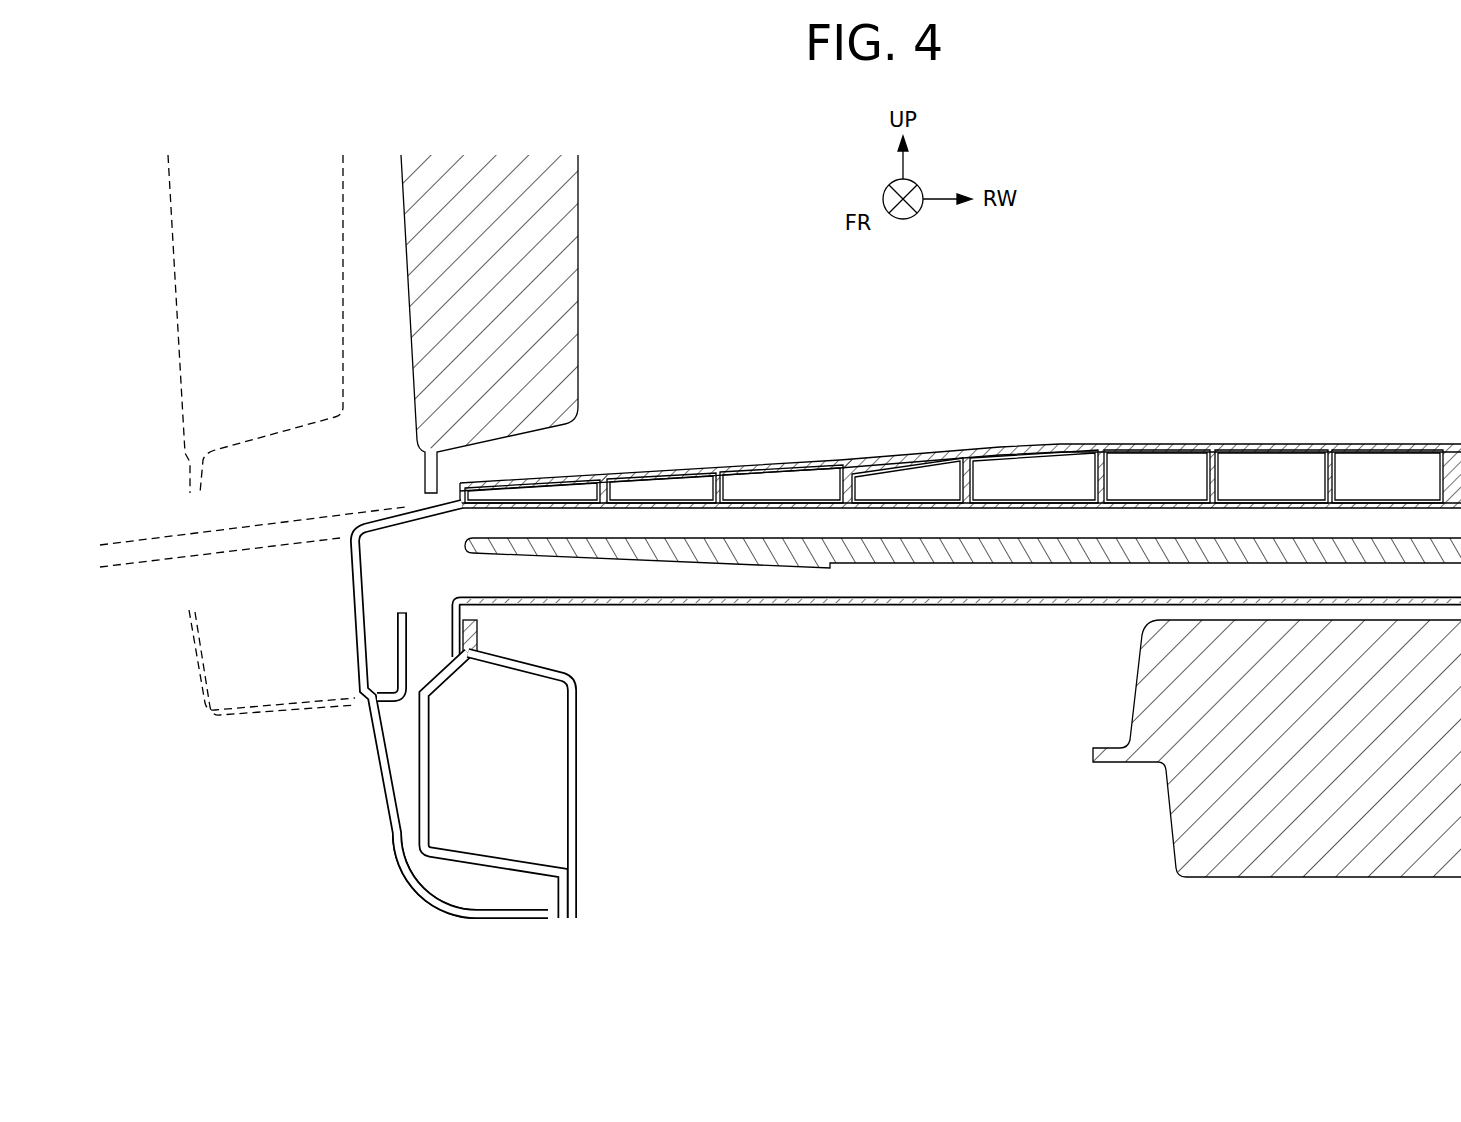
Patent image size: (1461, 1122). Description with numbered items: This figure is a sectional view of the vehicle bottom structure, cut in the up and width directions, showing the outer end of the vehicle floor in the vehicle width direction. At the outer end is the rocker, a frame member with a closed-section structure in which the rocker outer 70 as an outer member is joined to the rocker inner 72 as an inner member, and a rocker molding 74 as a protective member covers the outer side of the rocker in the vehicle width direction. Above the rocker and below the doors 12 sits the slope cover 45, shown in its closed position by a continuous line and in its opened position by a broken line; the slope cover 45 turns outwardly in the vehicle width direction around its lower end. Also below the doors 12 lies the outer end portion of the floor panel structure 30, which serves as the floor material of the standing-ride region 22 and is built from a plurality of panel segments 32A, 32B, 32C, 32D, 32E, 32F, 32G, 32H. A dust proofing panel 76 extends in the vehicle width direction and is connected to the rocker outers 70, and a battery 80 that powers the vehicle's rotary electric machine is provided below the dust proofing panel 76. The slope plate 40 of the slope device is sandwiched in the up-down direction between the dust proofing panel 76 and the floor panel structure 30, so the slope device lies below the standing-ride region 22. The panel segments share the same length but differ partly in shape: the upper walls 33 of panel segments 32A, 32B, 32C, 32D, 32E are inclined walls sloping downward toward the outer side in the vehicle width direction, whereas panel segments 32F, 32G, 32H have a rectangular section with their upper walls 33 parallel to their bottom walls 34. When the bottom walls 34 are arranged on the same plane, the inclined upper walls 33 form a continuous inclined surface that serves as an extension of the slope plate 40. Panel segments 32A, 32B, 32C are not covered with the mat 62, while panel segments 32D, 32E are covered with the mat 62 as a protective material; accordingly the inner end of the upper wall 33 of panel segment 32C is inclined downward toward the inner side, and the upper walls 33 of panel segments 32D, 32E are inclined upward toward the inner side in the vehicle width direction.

The doors 12 is at (560, 203).
The standing-ride region 22 is at (1218, 191).
The floor panel structure 30 is at (698, 380).
The panel segment 32A is at (587, 473).
The panel segment 32B is at (694, 460).
The panel segment 32C is at (802, 452).
The panel segment 32D is at (941, 458).
The panel segment 32E is at (1057, 443).
The panel segment 32F is at (1168, 448).
The panel segment 32G is at (1280, 440).
The panel segment 32H is at (1377, 440).
The upper wall 33 is at (507, 480).
The bottom wall 34 is at (512, 508).
The slope plate 40 is at (882, 550).
The slope cover 45 is at (358, 603).
The mat 62 is at (924, 454).
The rocker outer 70 is at (432, 757).
The rocker inner 72 is at (568, 813).
The rocker molding 74 is at (385, 802).
The dust proofing panel 76 is at (625, 608).
The battery 80 is at (1193, 823).